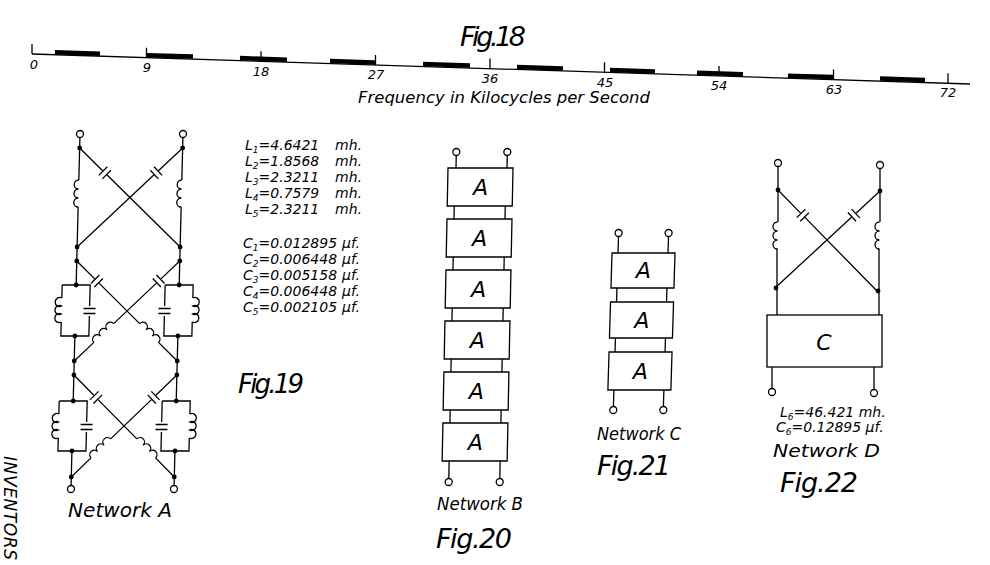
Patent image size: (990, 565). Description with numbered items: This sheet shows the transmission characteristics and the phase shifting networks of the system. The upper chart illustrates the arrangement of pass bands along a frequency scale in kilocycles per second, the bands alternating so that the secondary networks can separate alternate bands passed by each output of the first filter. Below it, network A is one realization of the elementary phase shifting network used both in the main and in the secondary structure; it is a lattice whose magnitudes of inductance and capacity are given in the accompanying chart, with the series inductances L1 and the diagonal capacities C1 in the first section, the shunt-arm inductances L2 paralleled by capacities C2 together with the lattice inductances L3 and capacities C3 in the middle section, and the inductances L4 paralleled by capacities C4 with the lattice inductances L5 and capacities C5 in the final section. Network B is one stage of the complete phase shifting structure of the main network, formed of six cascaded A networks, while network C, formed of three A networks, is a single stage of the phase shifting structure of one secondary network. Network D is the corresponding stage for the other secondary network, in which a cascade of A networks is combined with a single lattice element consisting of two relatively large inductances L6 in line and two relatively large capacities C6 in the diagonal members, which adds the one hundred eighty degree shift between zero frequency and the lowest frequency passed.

In FIG. 19, the series inductance L1 of network A L1 is at (131, 194).
In FIG. 19, the lattice capacitance C1 of network A C1 is at (131, 167).
In FIG. 19, the shunt-arm inductance L2 of network A L2 is at (124, 312).
In FIG. 19, the shunt-arm capacitance C2 of network A C2 is at (126, 314).
In FIG. 19, the lattice inductance L3 of network A L3 is at (127, 339).
In FIG. 19, the lattice capacitance C3 of network A C3 is at (128, 278).
In FIG. 19, the shunt-arm inductance L4 of network A L4 is at (120, 428).
In FIG. 19, the shunt-arm capacitance C4 of network A C4 is at (123, 432).
In FIG. 19, the lattice inductance L5 of network A L5 is at (123, 456).
In FIG. 19, the lattice capacitance C5 of network A C5 is at (125, 394).
In FIG. 22, the series inductance L6 of network D L6 is at (828, 237).
In FIG. 22, the lattice capacitance C6 of network D C6 is at (828, 209).